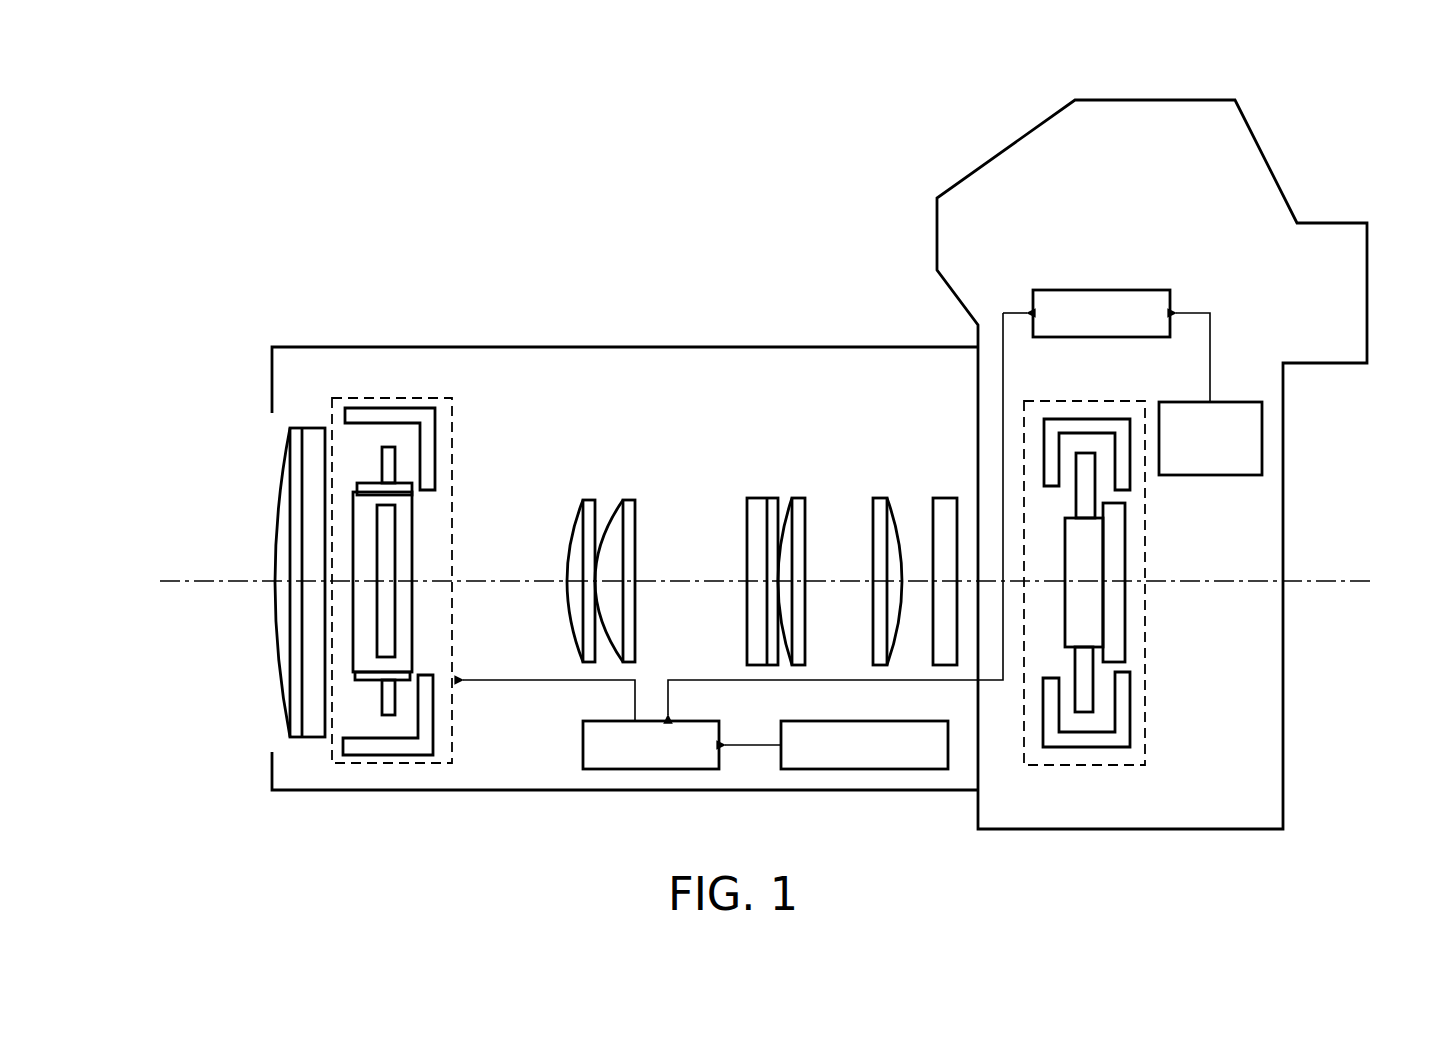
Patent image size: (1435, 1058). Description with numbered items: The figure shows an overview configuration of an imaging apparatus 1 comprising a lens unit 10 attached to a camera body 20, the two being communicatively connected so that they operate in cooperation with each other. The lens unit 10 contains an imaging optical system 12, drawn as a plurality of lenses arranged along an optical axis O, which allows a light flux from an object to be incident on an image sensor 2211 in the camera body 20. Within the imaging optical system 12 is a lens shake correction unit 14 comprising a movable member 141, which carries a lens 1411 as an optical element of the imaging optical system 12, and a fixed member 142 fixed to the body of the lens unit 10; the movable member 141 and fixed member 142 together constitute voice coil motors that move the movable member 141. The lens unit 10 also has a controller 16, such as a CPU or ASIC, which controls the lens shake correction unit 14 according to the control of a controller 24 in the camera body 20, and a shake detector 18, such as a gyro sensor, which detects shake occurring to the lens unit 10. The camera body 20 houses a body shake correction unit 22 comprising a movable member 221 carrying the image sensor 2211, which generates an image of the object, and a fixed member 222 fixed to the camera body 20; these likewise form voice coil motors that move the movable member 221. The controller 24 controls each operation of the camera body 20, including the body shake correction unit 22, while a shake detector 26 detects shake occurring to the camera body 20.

The imaging apparatus 1 is at (1358, 125).
The lens unit 10 is at (907, 347).
The imaging optical system 12 is at (962, 405).
The lens shake correction unit 14 is at (452, 510).
The movable member 141 is at (395, 466).
The fixed member 142 is at (435, 430).
The lens 1411 is at (389, 613).
The controller 16 is at (682, 720).
The shake detector 18 is at (908, 720).
The camera body 20 is at (1277, 176).
The body shake correction unit 22 is at (1145, 607).
The movable member 221 is at (1095, 460).
The image sensor 2211 is at (1093, 540).
The fixed member 222 is at (1130, 708).
The controller 24 is at (1128, 290).
The shake detector 26 is at (1235, 400).
The optical axis O is at (203, 580).